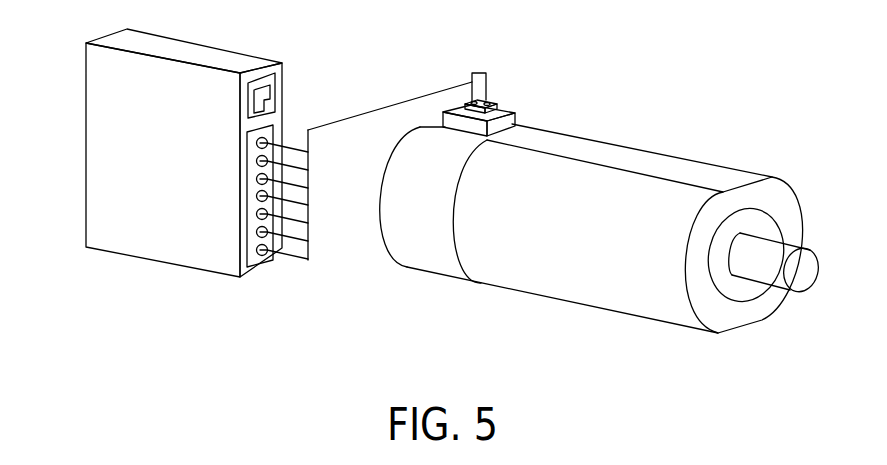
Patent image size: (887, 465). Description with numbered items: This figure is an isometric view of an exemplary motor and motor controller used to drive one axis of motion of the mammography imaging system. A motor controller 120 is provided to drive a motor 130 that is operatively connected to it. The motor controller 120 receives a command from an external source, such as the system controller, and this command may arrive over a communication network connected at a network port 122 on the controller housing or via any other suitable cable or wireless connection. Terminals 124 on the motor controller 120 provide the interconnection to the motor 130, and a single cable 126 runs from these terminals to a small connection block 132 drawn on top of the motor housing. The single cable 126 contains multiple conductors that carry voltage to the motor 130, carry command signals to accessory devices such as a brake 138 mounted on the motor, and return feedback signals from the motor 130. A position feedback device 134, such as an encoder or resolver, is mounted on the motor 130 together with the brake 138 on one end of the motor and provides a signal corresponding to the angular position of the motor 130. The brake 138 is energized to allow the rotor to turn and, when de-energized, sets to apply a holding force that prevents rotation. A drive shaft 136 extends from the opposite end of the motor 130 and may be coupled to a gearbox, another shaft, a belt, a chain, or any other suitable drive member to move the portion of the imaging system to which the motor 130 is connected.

The motor controller 120 is at (110, 118).
The network port 122 is at (270, 90).
The terminals 124 is at (268, 279).
The single cable 126 is at (398, 102).
The motor 130 is at (639, 158).
The terminal block 132 is at (505, 98).
The position feedback device 134 is at (359, 219).
The drive shaft 136 is at (783, 249).
The brake 138 is at (438, 260).